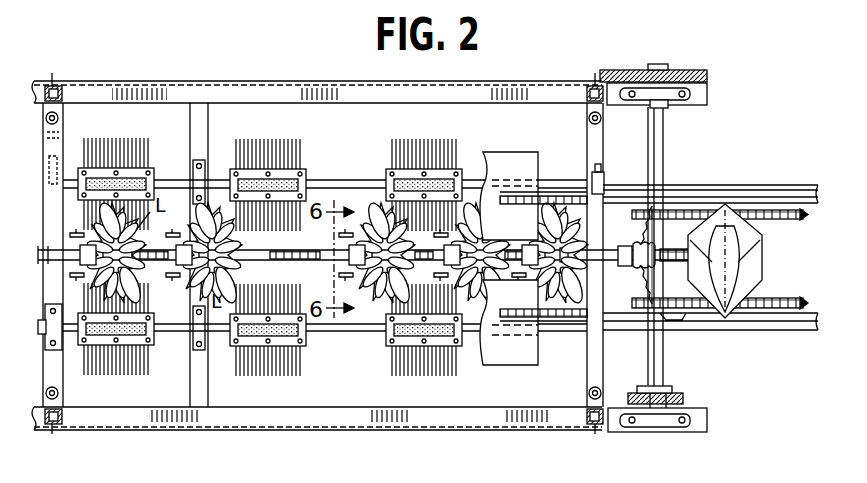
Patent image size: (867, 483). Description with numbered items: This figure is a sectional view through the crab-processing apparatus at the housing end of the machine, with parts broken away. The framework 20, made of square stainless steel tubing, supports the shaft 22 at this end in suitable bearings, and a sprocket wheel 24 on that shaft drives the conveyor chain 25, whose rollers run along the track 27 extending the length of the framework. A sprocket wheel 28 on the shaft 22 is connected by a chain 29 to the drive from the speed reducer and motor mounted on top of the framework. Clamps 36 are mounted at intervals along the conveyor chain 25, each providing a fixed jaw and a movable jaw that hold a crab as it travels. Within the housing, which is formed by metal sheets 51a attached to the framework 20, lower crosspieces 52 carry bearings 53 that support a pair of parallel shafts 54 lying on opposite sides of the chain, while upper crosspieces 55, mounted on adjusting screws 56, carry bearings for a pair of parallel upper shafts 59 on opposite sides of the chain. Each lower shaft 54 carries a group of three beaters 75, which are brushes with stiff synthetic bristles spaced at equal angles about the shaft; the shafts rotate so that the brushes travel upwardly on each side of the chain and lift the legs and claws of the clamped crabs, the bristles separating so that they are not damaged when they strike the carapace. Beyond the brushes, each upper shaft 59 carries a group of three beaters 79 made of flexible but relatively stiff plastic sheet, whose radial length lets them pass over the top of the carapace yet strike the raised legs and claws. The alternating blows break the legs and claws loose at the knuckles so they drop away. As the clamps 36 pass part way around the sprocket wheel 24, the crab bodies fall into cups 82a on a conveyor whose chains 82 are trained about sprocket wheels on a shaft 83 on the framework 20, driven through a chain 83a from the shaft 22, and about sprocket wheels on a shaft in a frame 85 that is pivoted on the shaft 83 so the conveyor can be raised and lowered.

The framework 20 is at (243, 92).
The metal sheets 51a is at (328, 84).
The shaft 22 is at (664, 349).
The sprocket wheel 24 is at (693, 268).
The conveyor chain 25 is at (489, 262).
The track 27 is at (487, 240).
The sprocket wheel 28 is at (688, 72).
The chain 29 is at (606, 69).
The clamps 36 is at (636, 268).
The lower crosspieces 52 is at (198, 139).
The bearings 53 is at (195, 168).
The shafts 54 is at (333, 183).
The upper crosspieces 55 is at (57, 152).
The adjusting screws 56 is at (62, 100).
The shafts 59 is at (569, 190).
The beaters 75 is at (135, 149).
The beaters 79 is at (523, 160).
The chains 82 is at (780, 220).
The cups 82a is at (752, 260).
The shaft 83 is at (656, 372).
The chain 83a is at (684, 396).
The frame 85 is at (762, 196).